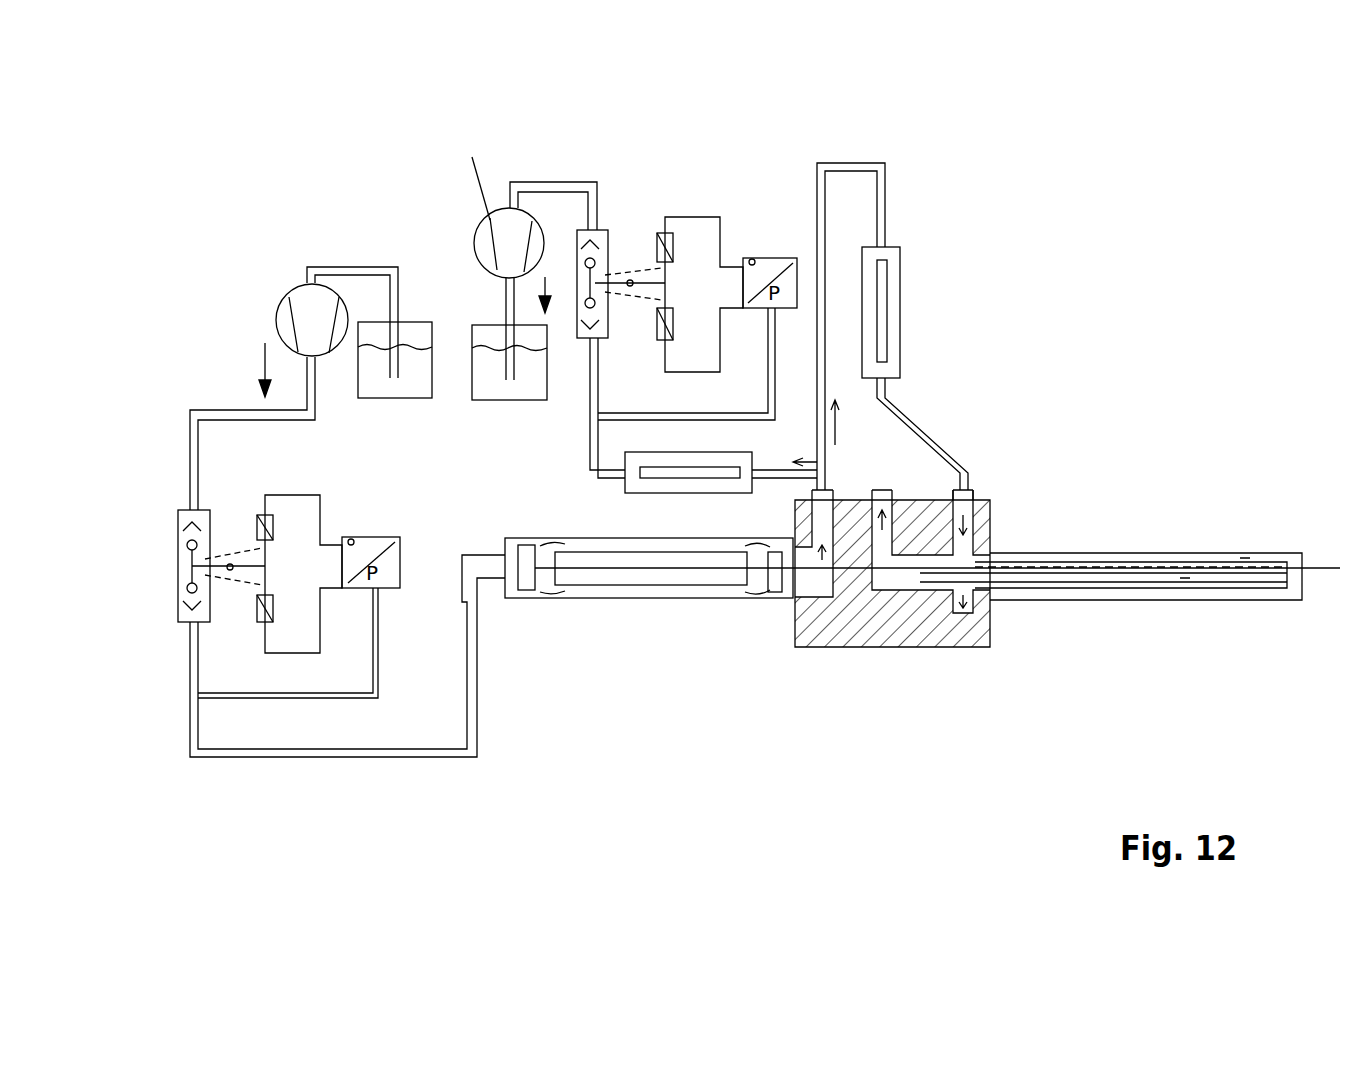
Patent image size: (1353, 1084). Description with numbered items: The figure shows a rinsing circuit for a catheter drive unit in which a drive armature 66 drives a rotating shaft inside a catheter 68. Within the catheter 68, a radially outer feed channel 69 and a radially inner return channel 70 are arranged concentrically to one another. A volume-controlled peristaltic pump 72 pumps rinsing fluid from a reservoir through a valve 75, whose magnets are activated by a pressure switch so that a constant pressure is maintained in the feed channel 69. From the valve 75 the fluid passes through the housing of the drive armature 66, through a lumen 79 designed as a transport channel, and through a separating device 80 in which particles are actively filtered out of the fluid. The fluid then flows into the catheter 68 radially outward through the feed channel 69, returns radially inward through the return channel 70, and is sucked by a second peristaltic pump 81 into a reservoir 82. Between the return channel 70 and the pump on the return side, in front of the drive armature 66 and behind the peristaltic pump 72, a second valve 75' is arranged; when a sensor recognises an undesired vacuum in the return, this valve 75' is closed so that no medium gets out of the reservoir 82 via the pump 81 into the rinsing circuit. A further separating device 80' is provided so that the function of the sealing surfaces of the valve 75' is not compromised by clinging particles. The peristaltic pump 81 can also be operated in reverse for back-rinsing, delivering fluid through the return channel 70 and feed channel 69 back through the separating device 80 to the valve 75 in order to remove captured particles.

The drive armature 66 is at (660, 585).
The catheter 68 is at (1237, 600).
The feed channel 69 is at (962, 512).
The return channel 70 is at (880, 580).
The peristaltic pump 72 is at (277, 318).
The valve 75 is at (162, 566).
The second valve 75' is at (635, 244).
The lumen 79 is at (816, 200).
The separating device 80 is at (913, 312).
The further separating device 80' is at (657, 488).
The peristaltic pump 81 is at (487, 222).
The reservoir 82 is at (487, 393).